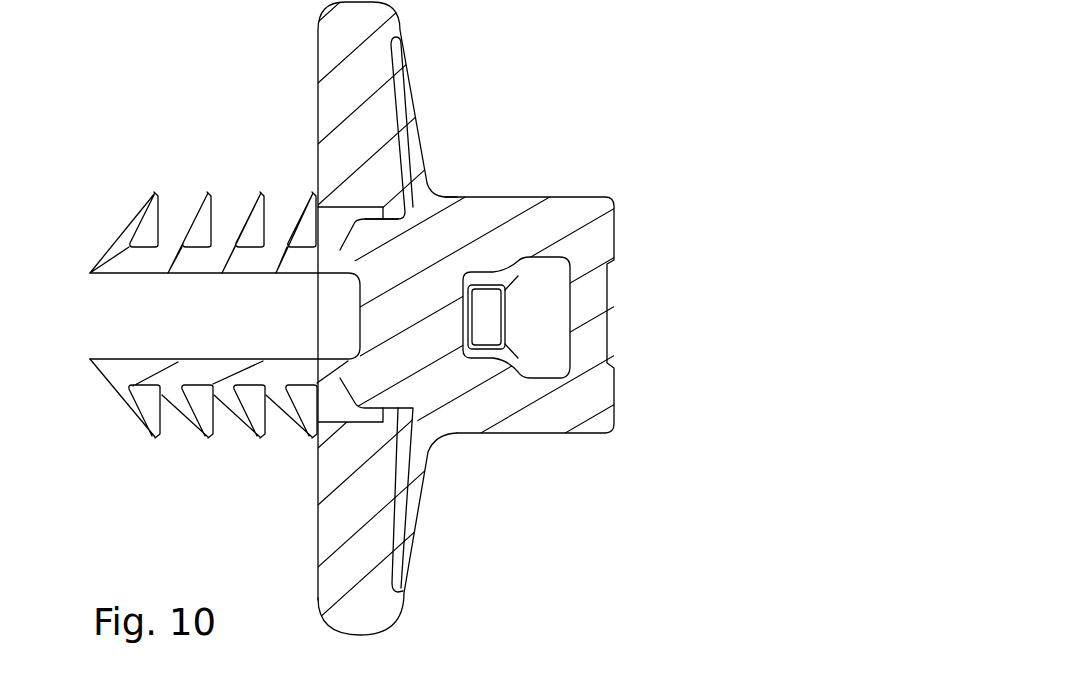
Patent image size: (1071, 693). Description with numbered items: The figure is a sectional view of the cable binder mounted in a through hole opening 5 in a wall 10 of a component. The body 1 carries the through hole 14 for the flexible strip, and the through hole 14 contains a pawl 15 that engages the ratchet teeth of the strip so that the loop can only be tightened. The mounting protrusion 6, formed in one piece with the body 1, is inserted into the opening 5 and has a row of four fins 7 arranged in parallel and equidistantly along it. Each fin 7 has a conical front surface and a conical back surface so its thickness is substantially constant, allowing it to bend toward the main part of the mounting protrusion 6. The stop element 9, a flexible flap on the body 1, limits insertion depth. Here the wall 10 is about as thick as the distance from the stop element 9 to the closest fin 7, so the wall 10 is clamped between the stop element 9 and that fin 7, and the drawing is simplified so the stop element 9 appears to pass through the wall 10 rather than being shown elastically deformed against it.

The mounting protrusion 6 is at (134, 136).
The wall 10 is at (320, 80).
The stop element 9 is at (413, 143).
The body 1 is at (533, 417).
The opening 5 is at (340, 334).
The fins 7 is at (128, 408).
The through hole 14 is at (537, 287).
The pawl 15 is at (507, 338).